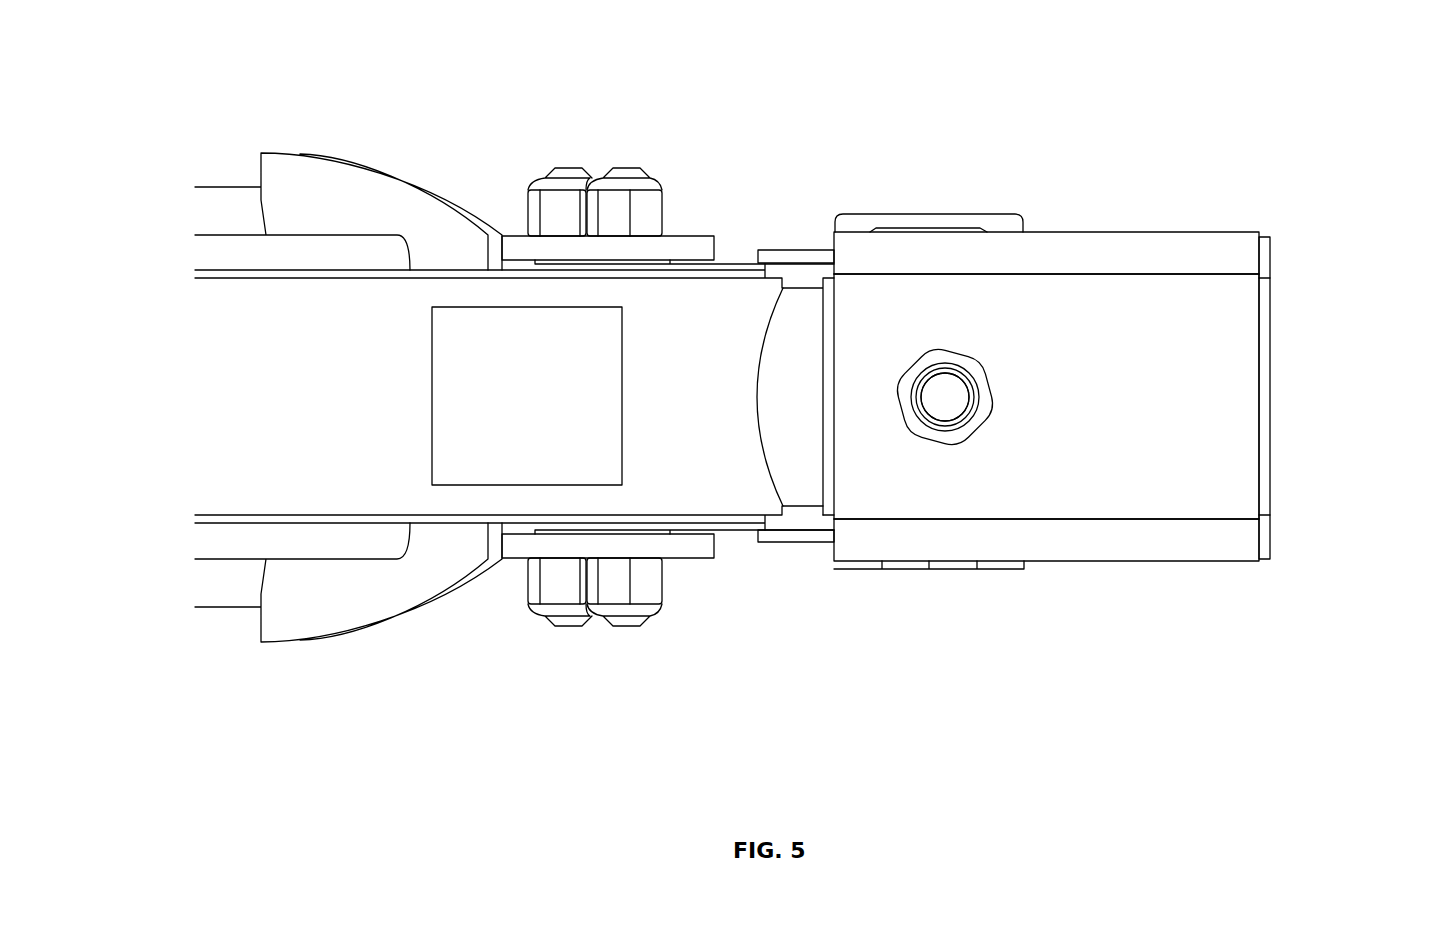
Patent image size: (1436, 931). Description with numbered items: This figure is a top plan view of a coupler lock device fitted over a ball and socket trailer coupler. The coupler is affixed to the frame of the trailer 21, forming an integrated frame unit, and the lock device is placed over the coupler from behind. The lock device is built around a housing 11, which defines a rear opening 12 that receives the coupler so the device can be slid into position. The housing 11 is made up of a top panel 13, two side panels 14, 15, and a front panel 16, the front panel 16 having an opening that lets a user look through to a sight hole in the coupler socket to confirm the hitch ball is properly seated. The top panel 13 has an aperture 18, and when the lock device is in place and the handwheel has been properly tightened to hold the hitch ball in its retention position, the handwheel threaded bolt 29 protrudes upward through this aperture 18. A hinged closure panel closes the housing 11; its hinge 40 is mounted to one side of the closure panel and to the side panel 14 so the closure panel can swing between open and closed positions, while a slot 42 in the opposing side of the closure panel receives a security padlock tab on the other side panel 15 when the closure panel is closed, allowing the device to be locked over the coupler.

The housing 11 is at (1124, 362).
The rear opening 12 is at (822, 297).
The top panel 13 is at (1128, 404).
The side panel 14 is at (1148, 543).
The side panel 15 is at (1120, 255).
The front panel 16 is at (1270, 295).
The aperture 18 is at (912, 368).
The trailer 21 is at (345, 397).
The threaded bolt 29 is at (945, 397).
The hinge 40 is at (953, 569).
The slot 42 is at (965, 232).